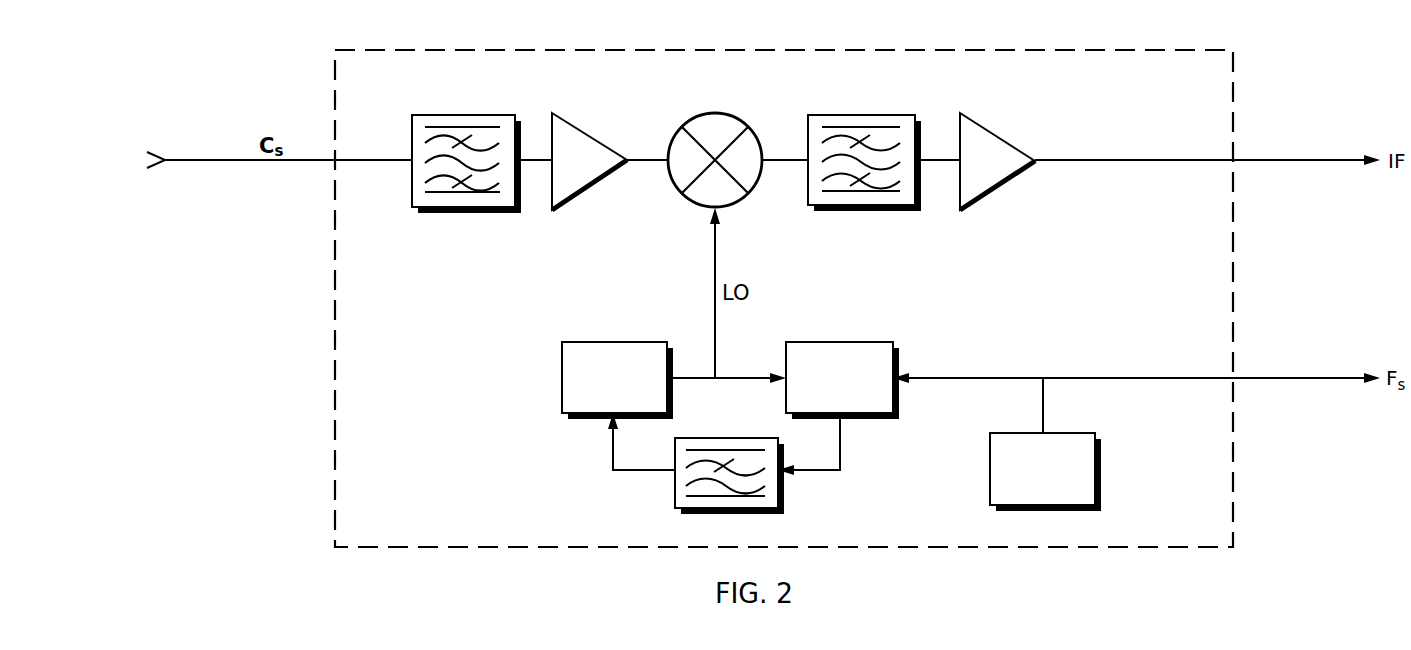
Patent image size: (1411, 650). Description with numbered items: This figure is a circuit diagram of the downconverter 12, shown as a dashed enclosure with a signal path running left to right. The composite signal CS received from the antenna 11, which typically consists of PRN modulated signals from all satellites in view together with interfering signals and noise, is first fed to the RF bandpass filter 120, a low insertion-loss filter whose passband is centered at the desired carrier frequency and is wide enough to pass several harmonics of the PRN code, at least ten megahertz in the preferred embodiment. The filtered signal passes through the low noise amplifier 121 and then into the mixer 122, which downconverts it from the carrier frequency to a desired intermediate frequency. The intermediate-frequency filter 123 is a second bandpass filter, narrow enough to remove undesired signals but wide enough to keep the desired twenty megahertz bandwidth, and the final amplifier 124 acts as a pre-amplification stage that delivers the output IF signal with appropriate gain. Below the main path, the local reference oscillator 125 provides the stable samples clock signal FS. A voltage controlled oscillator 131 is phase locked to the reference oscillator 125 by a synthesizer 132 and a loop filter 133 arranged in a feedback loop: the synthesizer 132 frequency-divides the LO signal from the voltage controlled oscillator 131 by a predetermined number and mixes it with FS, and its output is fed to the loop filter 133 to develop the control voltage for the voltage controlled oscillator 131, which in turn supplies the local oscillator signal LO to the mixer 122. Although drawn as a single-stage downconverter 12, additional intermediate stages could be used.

The antenna 11 is at (96, 156).
The downconverter 12 is at (1199, 50).
The RF bandpass filter 120 is at (438, 115).
The low noise amplifier 121 is at (584, 133).
The mixer 122 is at (728, 113).
The intermediate-frequency filter 123 is at (852, 115).
The final amplifier 124 is at (998, 137).
The local reference oscillator 125 is at (1098, 470).
The voltage controlled oscillator 131 is at (592, 342).
The synthesizer 132 is at (888, 342).
The loop filter 133 is at (695, 438).